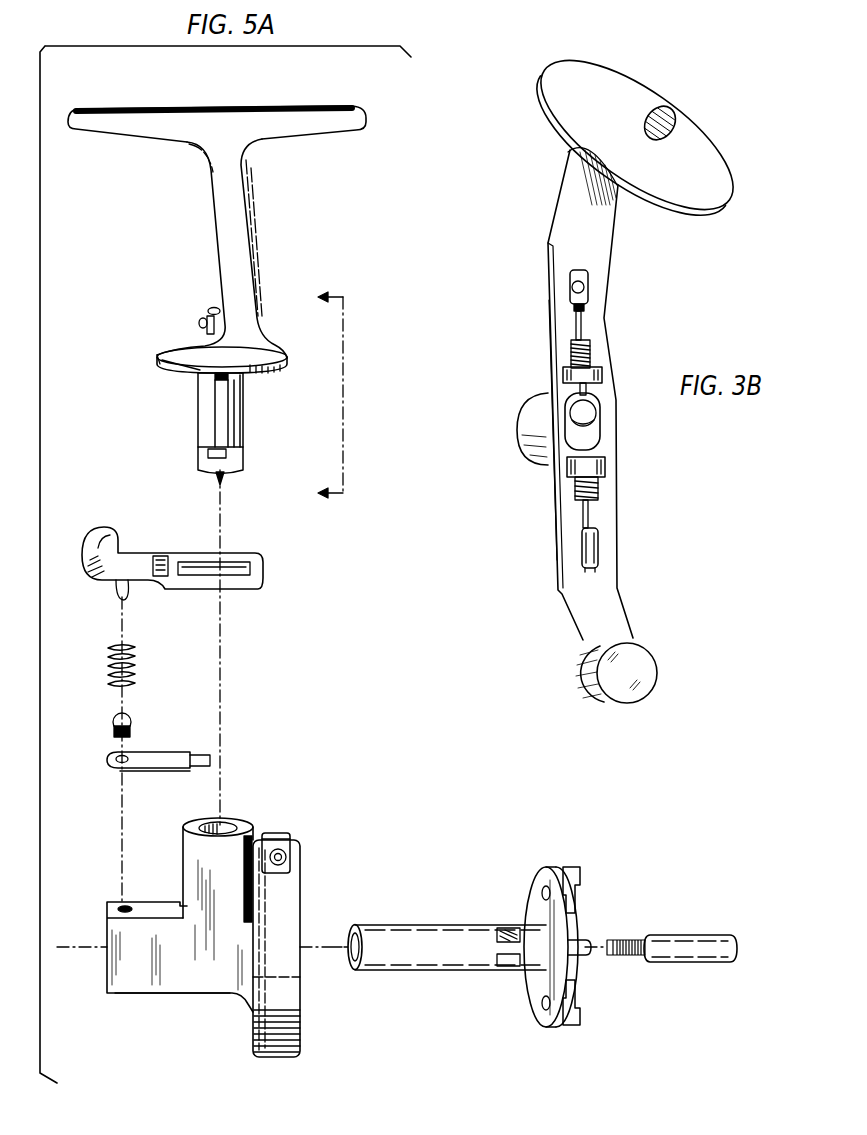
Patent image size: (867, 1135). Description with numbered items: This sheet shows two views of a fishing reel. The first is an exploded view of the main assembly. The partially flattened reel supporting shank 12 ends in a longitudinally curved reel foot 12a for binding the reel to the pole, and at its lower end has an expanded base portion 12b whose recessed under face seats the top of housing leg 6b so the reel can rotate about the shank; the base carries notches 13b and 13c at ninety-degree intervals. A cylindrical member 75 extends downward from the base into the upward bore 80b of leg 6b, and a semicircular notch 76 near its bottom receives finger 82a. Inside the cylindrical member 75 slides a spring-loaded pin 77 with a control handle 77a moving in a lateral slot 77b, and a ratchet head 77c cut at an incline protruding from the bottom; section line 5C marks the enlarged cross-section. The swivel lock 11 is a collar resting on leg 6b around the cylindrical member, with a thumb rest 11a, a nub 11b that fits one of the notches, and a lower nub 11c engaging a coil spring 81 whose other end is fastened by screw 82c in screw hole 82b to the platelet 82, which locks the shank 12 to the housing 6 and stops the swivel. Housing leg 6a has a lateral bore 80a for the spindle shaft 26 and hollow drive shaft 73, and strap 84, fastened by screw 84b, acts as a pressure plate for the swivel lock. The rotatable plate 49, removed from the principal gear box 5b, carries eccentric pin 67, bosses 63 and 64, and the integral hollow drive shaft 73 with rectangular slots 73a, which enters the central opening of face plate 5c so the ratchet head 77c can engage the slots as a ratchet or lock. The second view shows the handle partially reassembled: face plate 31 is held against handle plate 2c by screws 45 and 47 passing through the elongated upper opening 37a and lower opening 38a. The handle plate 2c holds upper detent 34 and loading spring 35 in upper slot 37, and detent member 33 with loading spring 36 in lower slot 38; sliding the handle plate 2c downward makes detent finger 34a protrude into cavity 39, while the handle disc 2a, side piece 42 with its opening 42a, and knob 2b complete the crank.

In FIG. 5A, the reel supporting shank 12 is at (229, 219).
In FIG. 5A, the reel foot 12a is at (245, 112).
In FIG. 5A, the expanded base portion 12b is at (288, 365).
In FIG. 5A, the notch 13b is at (158, 357).
In FIG. 5A, the notch 13c is at (213, 382).
In FIG. 5A, the cylindrical member 75 is at (241, 415).
In FIG. 5A, the semicircular notch 76 is at (200, 448).
In FIG. 5A, the spring-loaded cylindrical pin 77 is at (206, 318).
In FIG. 5A, the control handle 77a is at (214, 307).
In FIG. 5A, the lateral slot 77b is at (204, 329).
In FIG. 5A, the ratchet head 77c is at (223, 478).
In FIG. 5A, the section line 5C is at (319, 396).
In FIG. 5A, the swivel lock 11 is at (273, 546).
In FIG. 5A, the thumb rest 11a is at (112, 528).
In FIG. 5A, the nub 11b is at (158, 557).
In FIG. 5A, the nub 11c is at (125, 600).
In FIG. 5A, the coil spring 81 is at (136, 665).
In FIG. 5A, the platelet 82 is at (153, 771).
In FIG. 5A, the finger 82a is at (198, 736).
In FIG. 5A, the screw hole 82b is at (108, 761).
In FIG. 5A, the screw 82c is at (131, 726).
In FIG. 5A, the housing 6 is at (100, 1013).
In FIG. 5A, the housing leg 6a is at (167, 995).
In FIG. 5A, the housing leg 6b is at (191, 861).
In FIG. 5A, the central bore 80a is at (107, 950).
In FIG. 5A, the central bore 80b is at (229, 823).
In FIG. 5A, the strap 84 is at (279, 833).
In FIG. 5A, the screw 84b is at (286, 858).
In FIG. 5A, the left-hand face plate 5c is at (251, 1026).
In FIG. 5A, the principal gear box 5b is at (271, 1058).
In FIG. 5A, the hollow drive shaft 73 is at (416, 932).
In FIG. 5A, the rectangular slots 73a is at (504, 930).
In FIG. 5A, the rotatable plate 49 is at (537, 1006).
In FIG. 5A, the boss 63 is at (579, 893).
In FIG. 5A, the boss 64 is at (581, 1006).
In FIG. 5A, the eccentric pin 67 is at (589, 959).
In FIG. 5A, the spindle shaft 26 is at (689, 942).
In FIG. 3B, the disc 2a is at (652, 96).
In FIG. 3B, the handle plate 2c is at (573, 216).
In FIG. 3B, the knob 2b is at (646, 681).
In FIG. 3B, the screw 45 is at (590, 286).
In FIG. 3B, the elongated upper opening 37a is at (590, 304).
In FIG. 3B, the upper detent 34 is at (576, 328).
In FIG. 3B, the loading spring 35 is at (592, 356).
In FIG. 3B, the upper slot 37 is at (566, 389).
In FIG. 3B, the detent finger 34a is at (598, 385).
In FIG. 3B, the side knob 42 is at (529, 415).
In FIG. 3B, the opening 42a is at (601, 413).
In FIG. 3B, the cavity 39 is at (600, 432).
In FIG. 3B, the lower slot 38 is at (573, 465).
In FIG. 3B, the loading spring 36 is at (600, 483).
In FIG. 3B, the face plate 31 is at (553, 496).
In FIG. 3B, the detent member 33 is at (593, 512).
In FIG. 3B, the screw 47 is at (600, 549).
In FIG. 3B, the lower opening 38a is at (600, 560).